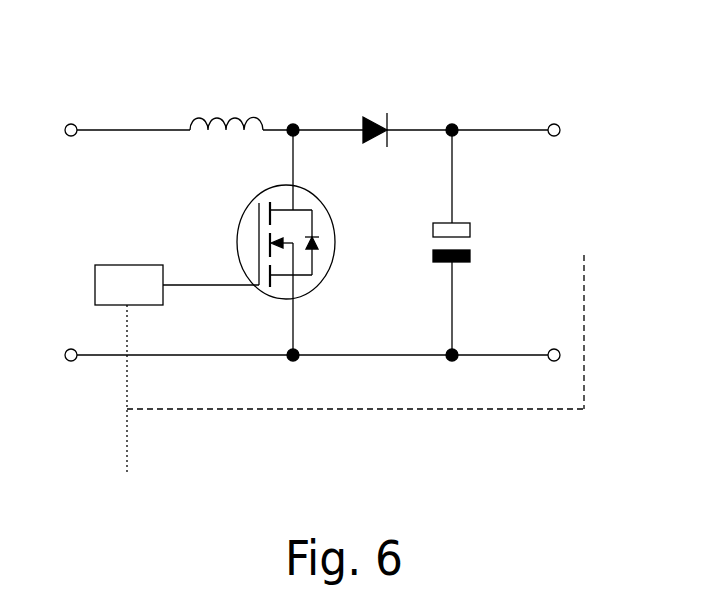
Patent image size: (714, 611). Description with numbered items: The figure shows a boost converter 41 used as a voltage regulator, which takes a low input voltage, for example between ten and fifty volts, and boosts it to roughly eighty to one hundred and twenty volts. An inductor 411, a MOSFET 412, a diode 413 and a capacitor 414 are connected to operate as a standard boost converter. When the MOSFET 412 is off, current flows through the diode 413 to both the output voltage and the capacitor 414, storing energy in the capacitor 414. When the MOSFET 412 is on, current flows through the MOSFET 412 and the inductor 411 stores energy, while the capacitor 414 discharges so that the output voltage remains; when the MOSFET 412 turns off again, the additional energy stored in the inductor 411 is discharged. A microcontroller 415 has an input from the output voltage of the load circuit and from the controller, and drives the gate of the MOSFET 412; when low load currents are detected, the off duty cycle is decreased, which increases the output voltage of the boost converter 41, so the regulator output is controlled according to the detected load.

The boost converter 41 is at (346, 250).
The inductor 411 is at (252, 120).
The MOSFET 412 is at (333, 255).
The diode 413 is at (388, 130).
The capacitor 414 is at (475, 248).
The microcontroller 415 is at (129, 285).